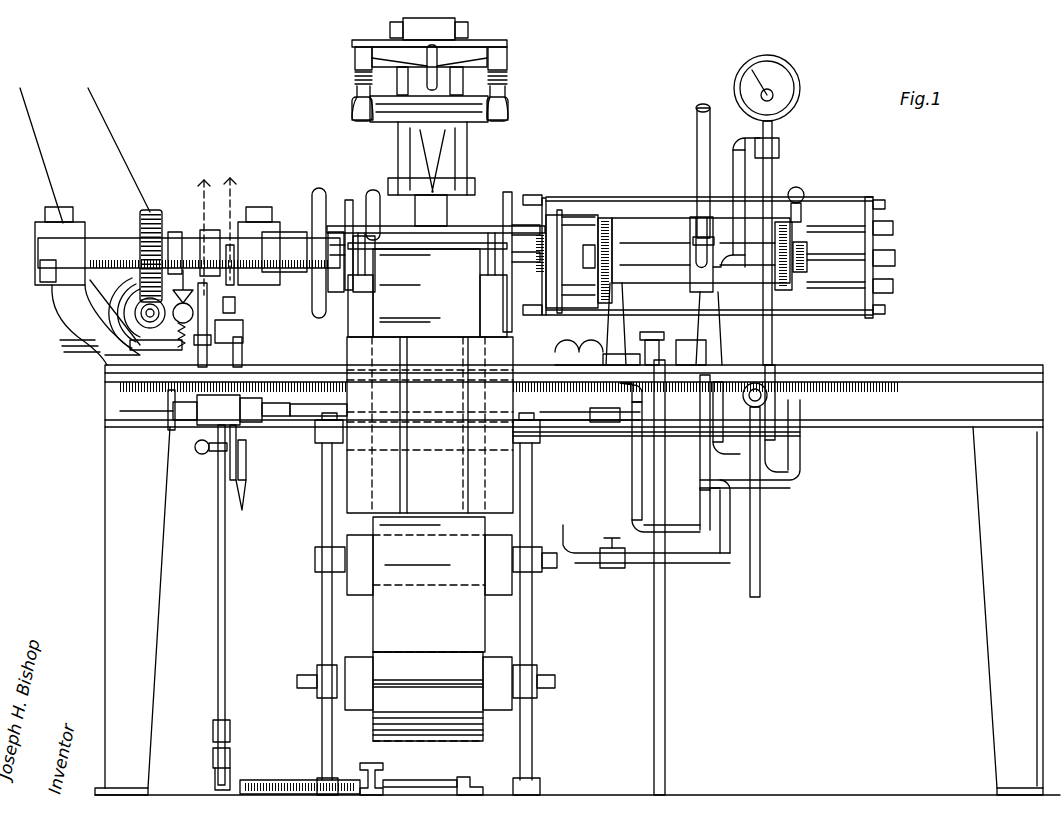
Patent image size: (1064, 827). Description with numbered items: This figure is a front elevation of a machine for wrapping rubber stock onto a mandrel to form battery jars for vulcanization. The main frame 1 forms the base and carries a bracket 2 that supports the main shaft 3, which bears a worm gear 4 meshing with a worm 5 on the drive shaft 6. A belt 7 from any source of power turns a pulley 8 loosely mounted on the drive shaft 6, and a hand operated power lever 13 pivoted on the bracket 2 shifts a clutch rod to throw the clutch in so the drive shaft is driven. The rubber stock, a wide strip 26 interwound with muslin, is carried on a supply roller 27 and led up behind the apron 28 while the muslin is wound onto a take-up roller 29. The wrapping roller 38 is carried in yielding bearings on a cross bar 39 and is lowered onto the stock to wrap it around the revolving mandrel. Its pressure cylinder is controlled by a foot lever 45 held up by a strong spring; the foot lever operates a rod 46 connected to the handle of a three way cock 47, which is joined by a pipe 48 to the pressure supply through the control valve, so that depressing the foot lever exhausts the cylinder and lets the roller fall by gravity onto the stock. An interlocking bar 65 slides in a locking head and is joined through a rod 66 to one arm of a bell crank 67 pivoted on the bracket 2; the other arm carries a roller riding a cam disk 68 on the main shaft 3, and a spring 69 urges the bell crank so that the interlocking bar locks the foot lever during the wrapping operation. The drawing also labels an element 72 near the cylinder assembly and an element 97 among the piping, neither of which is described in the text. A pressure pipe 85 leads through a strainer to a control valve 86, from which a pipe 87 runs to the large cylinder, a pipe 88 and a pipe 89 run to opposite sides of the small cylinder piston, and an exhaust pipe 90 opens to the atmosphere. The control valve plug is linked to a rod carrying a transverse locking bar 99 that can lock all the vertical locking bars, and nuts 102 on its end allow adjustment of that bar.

The main frame 1 is at (120, 548).
The bracket 2 is at (92, 345).
The main shaft 3 is at (105, 248).
The worm gear 4 is at (160, 215).
The worm 5 is at (128, 308).
The drive shaft 6 is at (158, 322).
The belt 7 is at (120, 134).
The pulley 8 is at (112, 330).
The power lever 13 is at (196, 321).
The rubber stock strip 26 is at (427, 285).
The supply roller 27 is at (500, 705).
The apron 28 is at (430, 425).
The take-up roller 29 is at (500, 598).
The wrapping roller 38 is at (480, 123).
The cross bar 39 is at (505, 50).
The foot lever 45 is at (383, 770).
The rod 46 is at (225, 606).
The three way cock 47 is at (248, 460).
The pipe 48 is at (212, 462).
The interlocking bar 65 is at (262, 393).
The rod 66 is at (242, 348).
The bell crank 67 is at (197, 286).
The cam disk 68 is at (232, 245).
The spring 69 is at (242, 315).
The cylinder 72 is at (508, 205).
The pressure pipe 85 is at (762, 530).
The control valve 86 is at (655, 360).
The pipe 87 is at (740, 180).
The pipe 88 is at (697, 164).
The pipe 89 is at (800, 466).
The exhaust pipe 90 is at (668, 612).
The valve pipe 97 is at (583, 560).
The locking bar 99 is at (292, 403).
The nuts 102 is at (195, 447).